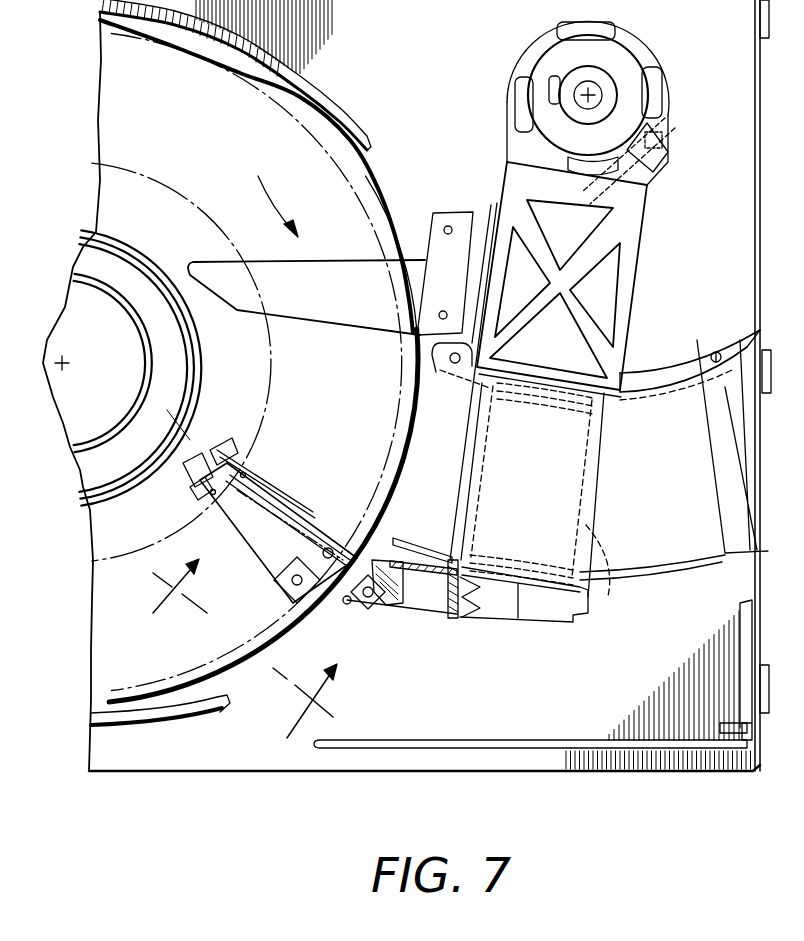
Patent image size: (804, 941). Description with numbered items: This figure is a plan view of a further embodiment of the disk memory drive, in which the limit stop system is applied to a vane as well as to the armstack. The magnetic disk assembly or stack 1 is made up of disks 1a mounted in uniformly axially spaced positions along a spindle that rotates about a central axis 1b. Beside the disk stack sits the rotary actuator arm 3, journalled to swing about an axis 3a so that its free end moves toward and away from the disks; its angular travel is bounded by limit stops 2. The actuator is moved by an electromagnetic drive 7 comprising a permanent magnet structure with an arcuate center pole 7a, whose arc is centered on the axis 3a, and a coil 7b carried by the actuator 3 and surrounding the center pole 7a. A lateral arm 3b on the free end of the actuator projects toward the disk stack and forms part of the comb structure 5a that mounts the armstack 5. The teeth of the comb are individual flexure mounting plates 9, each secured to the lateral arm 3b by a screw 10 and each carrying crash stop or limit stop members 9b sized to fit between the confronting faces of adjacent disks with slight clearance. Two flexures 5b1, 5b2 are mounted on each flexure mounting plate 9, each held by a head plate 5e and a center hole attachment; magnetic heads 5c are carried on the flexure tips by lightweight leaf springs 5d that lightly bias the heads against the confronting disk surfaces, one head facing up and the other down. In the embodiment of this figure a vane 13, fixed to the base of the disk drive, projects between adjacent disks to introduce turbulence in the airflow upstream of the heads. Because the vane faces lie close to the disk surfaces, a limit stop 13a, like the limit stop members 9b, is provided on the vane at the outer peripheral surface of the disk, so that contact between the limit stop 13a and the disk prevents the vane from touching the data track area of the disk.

The magnetic disk assembly or stack 1 is at (92, 653).
The disks 1a is at (92, 590).
The central axis 1b is at (64, 360).
The limit stops 2 is at (720, 352).
The actuator arm 3 is at (640, 263).
The axis 3a is at (592, 92).
The lateral projection or arm 3b is at (440, 616).
The armstack 5 is at (272, 522).
The comb structure 5a is at (378, 598).
The first lever bar 5b1 is at (262, 487).
The second lever bar 5b2 is at (292, 513).
The magnetic heads 5c is at (196, 455).
The leaf springs 5d is at (222, 445).
The head plate 5e is at (270, 593).
The electromagnetic drive 7 is at (643, 369).
The arcuate center pole 7a is at (687, 410).
The coil 7b is at (610, 597).
The flexure mounting plate 9 is at (302, 610).
The crash stop or limit stop members 9b is at (347, 605).
The screw 10 is at (400, 532).
The guide plate 13 is at (330, 270).
The limit stop 13a is at (405, 285).